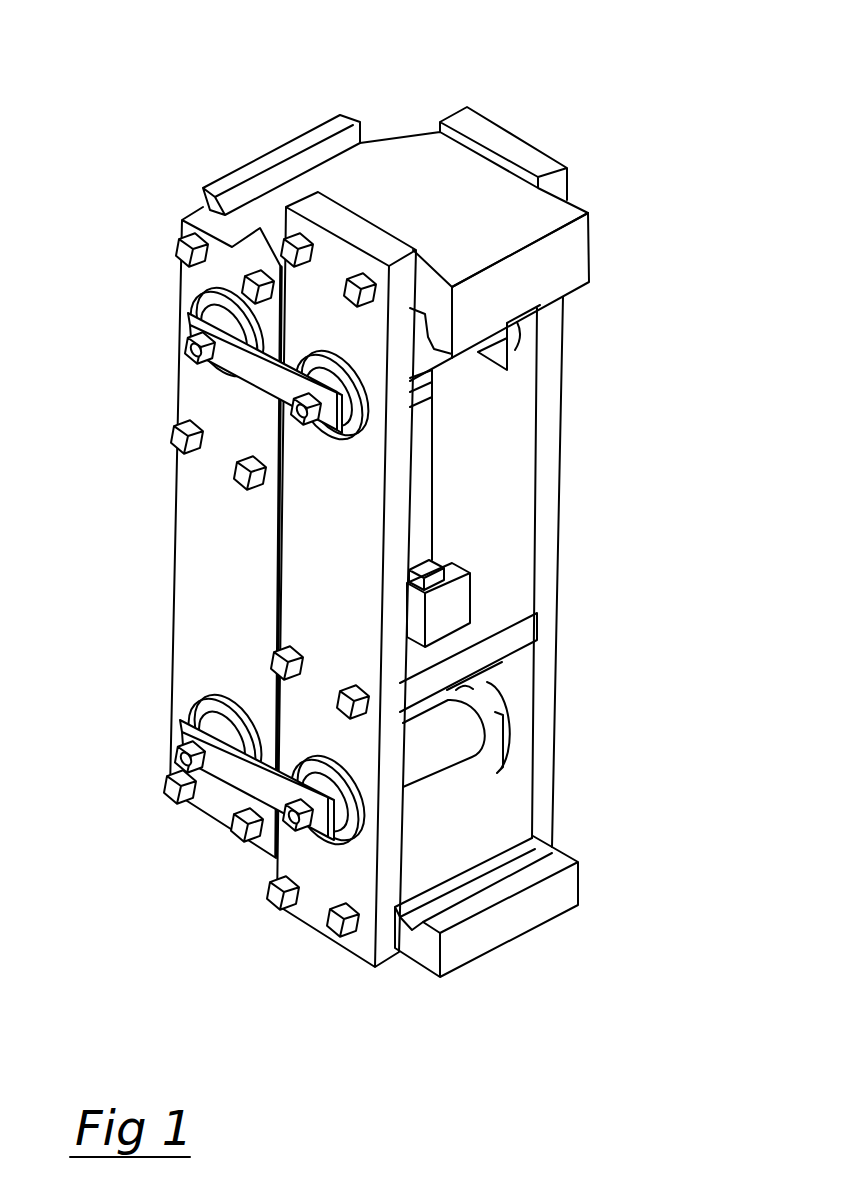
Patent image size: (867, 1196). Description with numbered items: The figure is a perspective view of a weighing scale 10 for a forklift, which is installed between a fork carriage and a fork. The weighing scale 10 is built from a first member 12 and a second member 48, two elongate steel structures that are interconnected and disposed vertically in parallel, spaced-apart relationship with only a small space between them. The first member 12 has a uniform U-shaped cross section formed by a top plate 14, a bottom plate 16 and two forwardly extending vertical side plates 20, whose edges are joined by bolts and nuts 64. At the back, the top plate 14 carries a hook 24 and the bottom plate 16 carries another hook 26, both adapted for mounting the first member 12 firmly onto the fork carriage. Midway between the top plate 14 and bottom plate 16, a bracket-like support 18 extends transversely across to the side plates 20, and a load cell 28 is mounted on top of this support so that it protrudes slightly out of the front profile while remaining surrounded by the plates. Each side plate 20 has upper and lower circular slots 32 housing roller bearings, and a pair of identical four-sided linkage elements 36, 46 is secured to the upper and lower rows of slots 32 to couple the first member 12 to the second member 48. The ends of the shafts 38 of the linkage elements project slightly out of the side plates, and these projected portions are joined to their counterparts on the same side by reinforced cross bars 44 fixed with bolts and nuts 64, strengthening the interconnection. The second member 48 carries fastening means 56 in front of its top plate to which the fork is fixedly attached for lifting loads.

The weighing scale 10 is at (437, 90).
The first member 12 is at (398, 975).
The top plate 14 is at (478, 202).
The bottom plate 16 is at (468, 838).
The support 18 is at (525, 625).
The side plates 20 is at (552, 462).
The hook 24 is at (568, 263).
The hook 26 is at (560, 895).
The load cell 28 is at (455, 608).
The slots 32 is at (329, 455).
The linkage element 36 is at (462, 384).
The shafts 38 is at (443, 730).
The reinforced cross bars 44 is at (233, 368).
The linkage element 46 is at (463, 784).
The second member 48 is at (212, 840).
The fastening means 56 is at (243, 168).
The bolts and nuts 64 is at (178, 247).